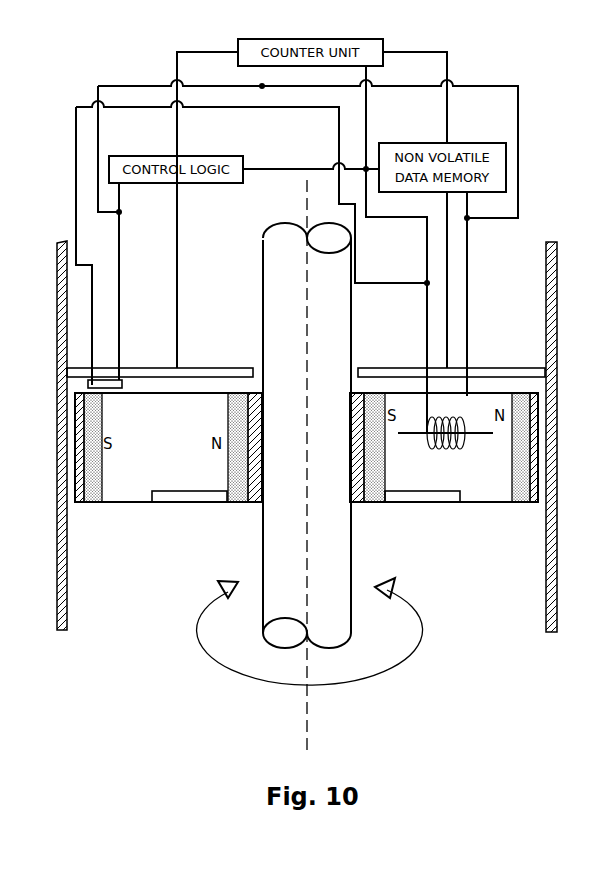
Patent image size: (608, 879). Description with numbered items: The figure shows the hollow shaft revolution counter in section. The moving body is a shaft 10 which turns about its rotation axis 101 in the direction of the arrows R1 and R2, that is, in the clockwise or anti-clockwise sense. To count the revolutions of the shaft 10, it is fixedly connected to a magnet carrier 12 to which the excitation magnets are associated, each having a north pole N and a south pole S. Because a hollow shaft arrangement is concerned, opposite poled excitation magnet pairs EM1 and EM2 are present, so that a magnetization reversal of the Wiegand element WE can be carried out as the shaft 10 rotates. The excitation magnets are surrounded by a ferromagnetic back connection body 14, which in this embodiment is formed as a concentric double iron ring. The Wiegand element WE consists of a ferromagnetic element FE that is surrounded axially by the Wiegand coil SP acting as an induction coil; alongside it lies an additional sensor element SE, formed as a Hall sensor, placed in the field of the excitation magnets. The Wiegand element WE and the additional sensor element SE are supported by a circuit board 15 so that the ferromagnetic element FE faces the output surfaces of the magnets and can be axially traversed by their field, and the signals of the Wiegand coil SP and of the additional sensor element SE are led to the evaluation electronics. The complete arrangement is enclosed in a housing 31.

The shaft 10 is at (327, 616).
The rotation axis 101 is at (307, 690).
The magnet carrier 12 is at (205, 497).
The back connection body 14 is at (70, 433).
The circuit board 15 is at (418, 372).
The housing 31 is at (553, 308).
The additional sensor element SE is at (121, 382).
The Wiegand element WE is at (455, 408).
The Wiegand coil SP is at (440, 450).
The ferromagnetic element FE is at (475, 438).
The excitation magnet EM1 is at (239, 483).
The excitation magnet EM2 is at (95, 487).
The arrow R1 is at (305, 633).
The arrow R2 is at (403, 590).